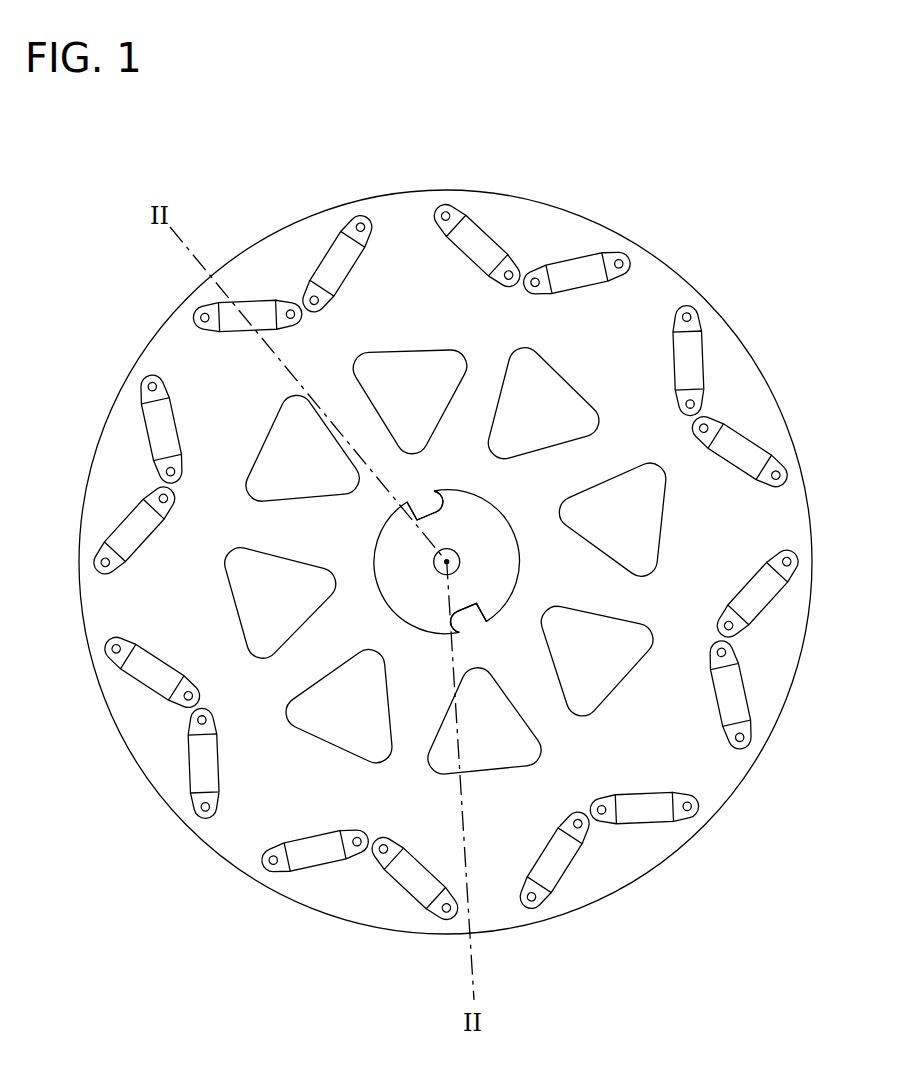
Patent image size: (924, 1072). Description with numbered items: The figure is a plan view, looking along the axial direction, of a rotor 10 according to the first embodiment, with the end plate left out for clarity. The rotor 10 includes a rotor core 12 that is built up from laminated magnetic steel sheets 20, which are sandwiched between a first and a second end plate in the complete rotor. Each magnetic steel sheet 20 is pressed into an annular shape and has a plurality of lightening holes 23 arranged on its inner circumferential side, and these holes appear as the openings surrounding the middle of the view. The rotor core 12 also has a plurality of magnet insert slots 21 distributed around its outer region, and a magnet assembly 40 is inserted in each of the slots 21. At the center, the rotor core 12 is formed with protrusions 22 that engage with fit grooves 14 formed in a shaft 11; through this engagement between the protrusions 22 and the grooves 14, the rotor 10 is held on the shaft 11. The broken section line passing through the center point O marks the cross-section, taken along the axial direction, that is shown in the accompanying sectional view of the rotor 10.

The rotor 10 is at (445, 557).
The shaft 11 is at (502, 578).
The rotor core 12 is at (474, 572).
The fit groove 14 is at (466, 616).
The magnetic steel sheet 20 is at (445, 567).
The magnet insert slot 21 is at (188, 790).
The protrusion 22 is at (460, 490).
The lightening hole 23 is at (629, 672).
The magnet assembly 40 is at (312, 860).
The center point of the section line O is at (446, 562).